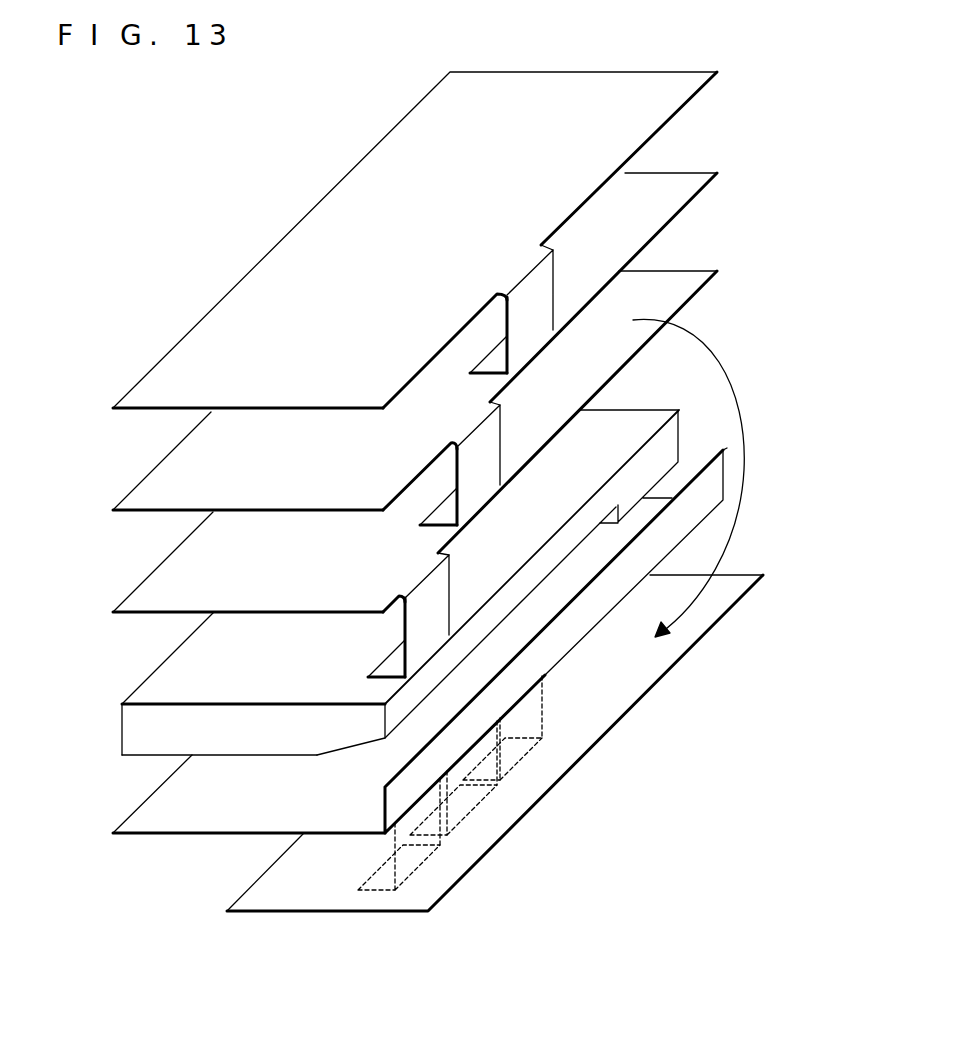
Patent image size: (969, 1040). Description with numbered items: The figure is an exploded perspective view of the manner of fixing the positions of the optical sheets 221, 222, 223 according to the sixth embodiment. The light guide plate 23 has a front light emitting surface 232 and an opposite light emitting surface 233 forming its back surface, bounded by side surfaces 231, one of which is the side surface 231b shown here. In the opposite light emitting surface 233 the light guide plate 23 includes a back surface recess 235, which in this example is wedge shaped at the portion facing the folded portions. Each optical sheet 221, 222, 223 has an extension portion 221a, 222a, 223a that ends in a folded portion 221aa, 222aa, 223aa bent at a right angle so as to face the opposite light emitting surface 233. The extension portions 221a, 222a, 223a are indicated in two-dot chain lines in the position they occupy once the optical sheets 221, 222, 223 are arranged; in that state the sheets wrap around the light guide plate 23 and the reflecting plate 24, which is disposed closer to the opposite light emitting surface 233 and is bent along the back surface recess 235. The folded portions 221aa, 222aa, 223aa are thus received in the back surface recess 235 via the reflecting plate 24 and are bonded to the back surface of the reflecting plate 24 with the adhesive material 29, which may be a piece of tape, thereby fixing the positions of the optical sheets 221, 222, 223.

The optical sheet 223 is at (290, 263).
The extension portion 223a is at (527, 290).
The folded portion 223aa is at (493, 356).
The optical sheet 222 is at (197, 448).
The extension portion 222a is at (473, 437).
The folded portion 222aa is at (443, 508).
The optical sheet 221 is at (185, 562).
The extension portion 221a is at (428, 595).
The folded portion 221aa is at (387, 662).
The light guide plate 23 is at (157, 695).
The light emitting surface 232 is at (190, 678).
The opposite light emitting surface 233 is at (207, 758).
The back surface recess 235 is at (350, 748).
The reflecting plate 24 is at (224, 815).
The side surface 231b is at (383, 786).
The side surfaces 231 is at (547, 710).
The adhesive material 29 is at (260, 892).